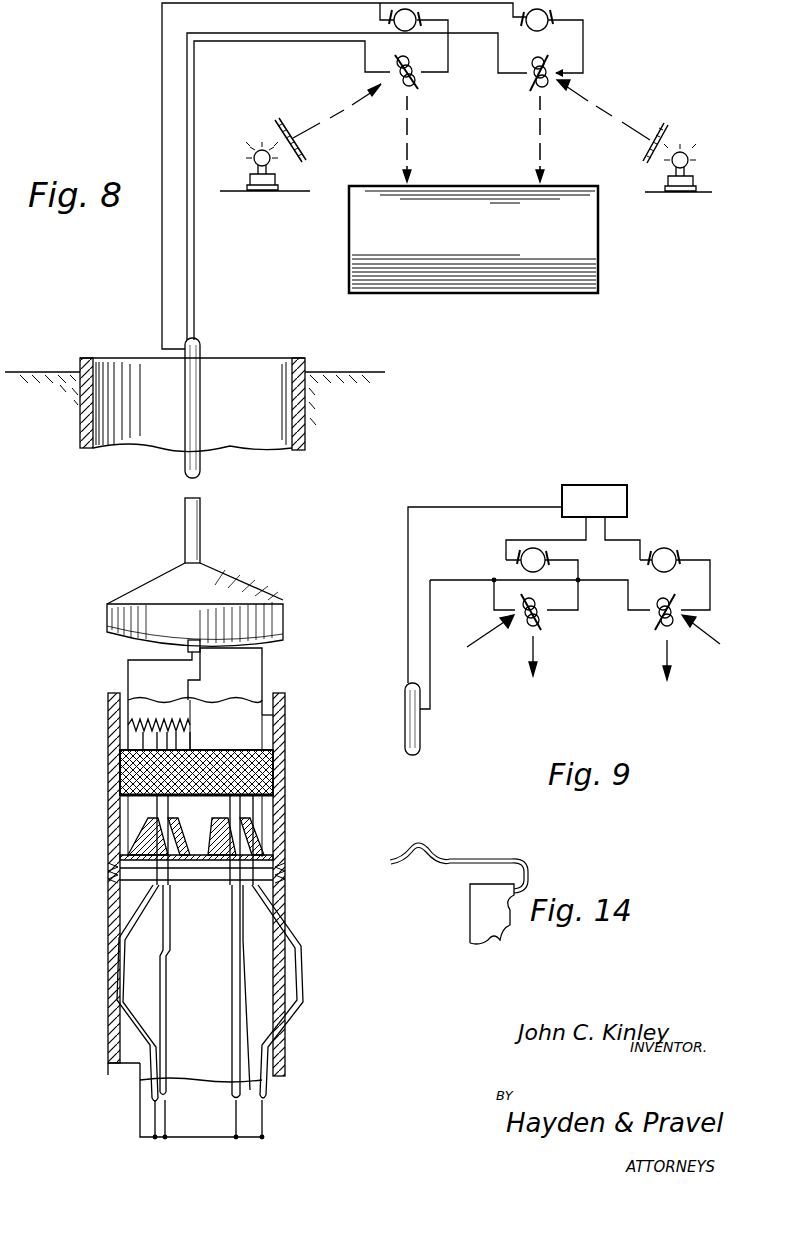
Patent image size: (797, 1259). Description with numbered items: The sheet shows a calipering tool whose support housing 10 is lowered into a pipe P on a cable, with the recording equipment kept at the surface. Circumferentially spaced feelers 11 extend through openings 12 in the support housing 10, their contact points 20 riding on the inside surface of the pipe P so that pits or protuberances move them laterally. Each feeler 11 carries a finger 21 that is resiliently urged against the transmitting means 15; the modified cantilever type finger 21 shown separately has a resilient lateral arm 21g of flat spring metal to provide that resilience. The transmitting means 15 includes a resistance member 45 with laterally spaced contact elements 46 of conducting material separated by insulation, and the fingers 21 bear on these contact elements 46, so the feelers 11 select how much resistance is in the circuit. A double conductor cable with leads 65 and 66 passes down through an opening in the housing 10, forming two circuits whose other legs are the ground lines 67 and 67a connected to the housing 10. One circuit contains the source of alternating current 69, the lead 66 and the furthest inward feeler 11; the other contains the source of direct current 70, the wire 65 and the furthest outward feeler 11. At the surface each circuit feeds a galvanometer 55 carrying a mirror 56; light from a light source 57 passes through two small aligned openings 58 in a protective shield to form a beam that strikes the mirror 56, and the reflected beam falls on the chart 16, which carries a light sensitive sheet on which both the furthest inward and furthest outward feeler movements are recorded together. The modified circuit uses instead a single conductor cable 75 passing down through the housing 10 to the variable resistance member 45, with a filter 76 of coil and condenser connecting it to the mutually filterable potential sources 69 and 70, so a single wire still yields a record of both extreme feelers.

In FIG. 8, the support housing 10 is at (162, 584).
In FIG. 8, the feeler 11 is at (300, 963).
In FIG. 8, the opening 12 is at (162, 980).
In FIG. 8, the transmitting means 15 is at (206, 749).
In FIG. 8, the chart 16 is at (600, 226).
In FIG. 8, the contact point 20 is at (117, 976).
In FIG. 8, the finger 21 is at (160, 809).
In FIG. 14, the finger 21 is at (478, 914).
In FIG. 14, the resilient lateral arm 21g is at (450, 860).
In FIG. 8, the resistance member 45 is at (234, 750).
In FIG. 8, the contact element 46 is at (275, 785).
In FIG. 8, the galvanometer 55 is at (418, 78).
In FIG. 9, the galvanometer 55 is at (544, 624).
In FIG. 8, the mirror 56 is at (414, 88).
In FIG. 9, the mirror 56 is at (528, 598).
In FIG. 8, the light source 57 is at (258, 150).
In FIG. 8, the aligned opening 58 is at (292, 128).
In FIG. 8, the lead 65 is at (188, 276).
In FIG. 8, the lead 66 is at (198, 312).
In FIG. 8, the ground line 67 is at (161, 239).
In FIG. 9, the ground line 67 is at (431, 658).
In FIG. 8, the ground line 67a is at (263, 664).
In FIG. 8, the source of alternating current 69 is at (381, 15).
In FIG. 9, the source of alternating current 69 is at (527, 548).
In FIG. 8, the source of direct current 70 is at (553, 13).
In FIG. 9, the source of direct current 70 is at (668, 546).
In FIG. 9, the single conductor cable 75 is at (407, 561).
In FIG. 9, the filter 76 is at (628, 510).
In FIG. 8, the pipe P is at (306, 438).